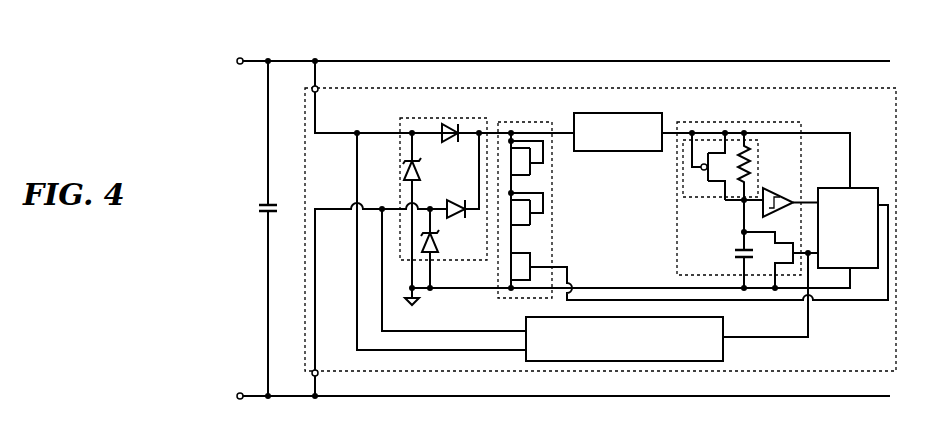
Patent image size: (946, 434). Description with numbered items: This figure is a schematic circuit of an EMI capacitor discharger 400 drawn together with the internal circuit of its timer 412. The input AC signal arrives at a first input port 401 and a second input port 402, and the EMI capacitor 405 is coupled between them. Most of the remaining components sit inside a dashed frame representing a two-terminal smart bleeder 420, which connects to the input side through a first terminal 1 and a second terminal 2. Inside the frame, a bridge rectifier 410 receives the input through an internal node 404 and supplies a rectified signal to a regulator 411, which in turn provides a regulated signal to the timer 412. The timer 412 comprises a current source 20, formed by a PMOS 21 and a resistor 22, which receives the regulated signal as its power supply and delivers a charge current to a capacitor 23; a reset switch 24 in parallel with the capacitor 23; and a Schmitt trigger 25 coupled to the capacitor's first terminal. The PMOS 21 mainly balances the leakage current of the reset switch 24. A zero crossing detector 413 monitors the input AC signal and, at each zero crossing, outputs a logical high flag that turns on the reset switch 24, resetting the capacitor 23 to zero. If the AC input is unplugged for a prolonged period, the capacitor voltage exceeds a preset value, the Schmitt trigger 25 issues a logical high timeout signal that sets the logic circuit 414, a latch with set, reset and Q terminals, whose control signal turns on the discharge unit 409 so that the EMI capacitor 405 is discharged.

The EMI capacitor discharger 400 is at (246, 51).
The first input terminal 401 is at (238, 63).
The second input terminal 402 is at (239, 394).
The EMI capacitor 405 is at (259, 204).
The internal node 404 is at (383, 207).
The rectifier diode circuit 410 is at (466, 256).
The switch circuit 409 is at (552, 251).
The regulator 411 is at (623, 113).
The timer 412 is at (747, 193).
The zero crossing detector 413 is at (728, 344).
The logic circuit 414 is at (871, 180).
The integrated circuit 420 is at (471, 88).
The first pin 1 is at (319, 87).
The second pin 2 is at (318, 376).
The current source 20 is at (733, 177).
The PMOS 21 is at (705, 170).
The resistor 22 is at (755, 166).
The capacitor 23 is at (733, 252).
The reset switch 24 is at (792, 255).
The Schmitt trigger 25 is at (775, 196).